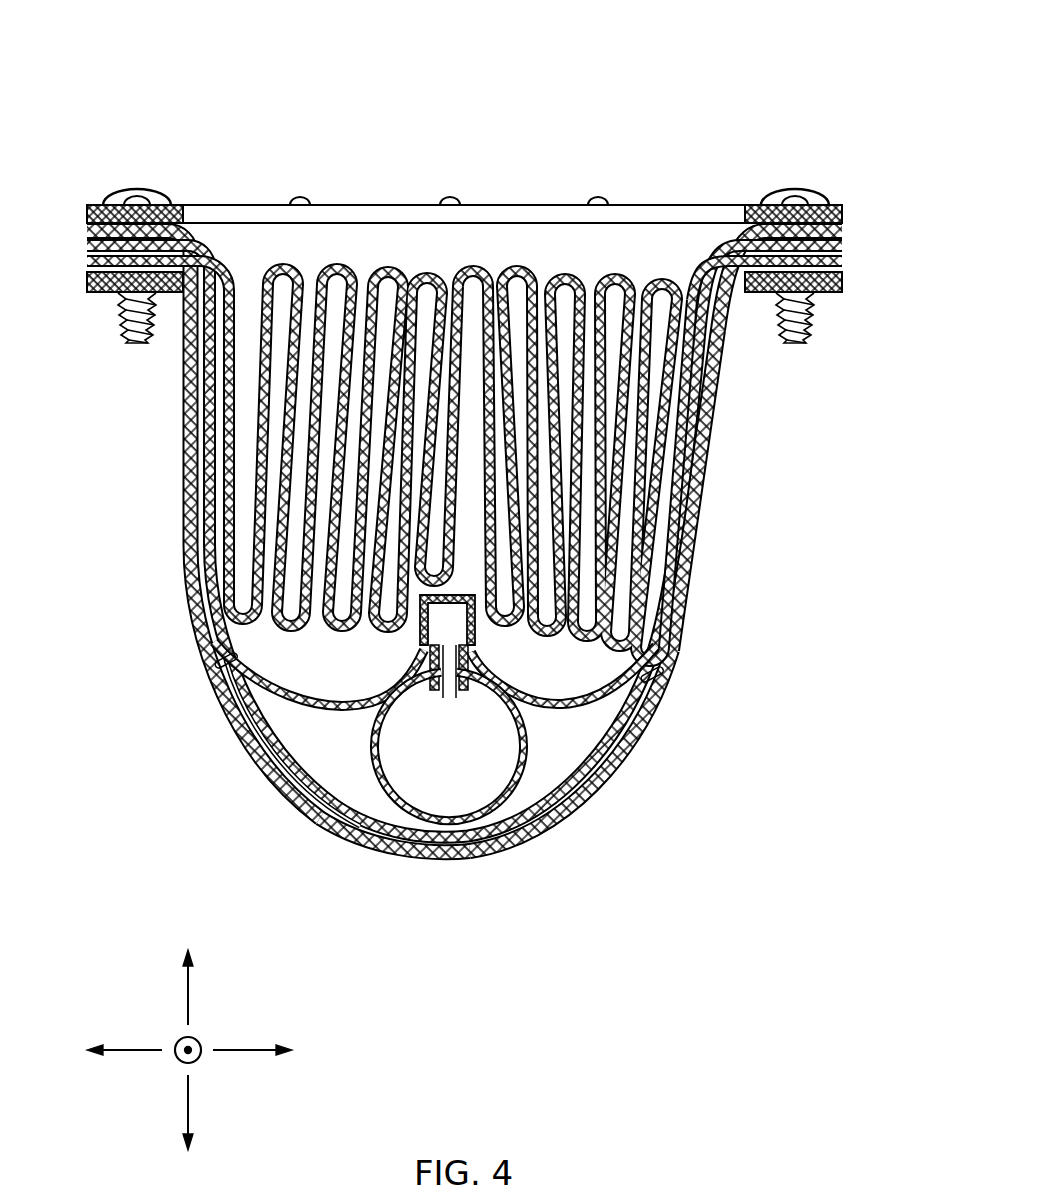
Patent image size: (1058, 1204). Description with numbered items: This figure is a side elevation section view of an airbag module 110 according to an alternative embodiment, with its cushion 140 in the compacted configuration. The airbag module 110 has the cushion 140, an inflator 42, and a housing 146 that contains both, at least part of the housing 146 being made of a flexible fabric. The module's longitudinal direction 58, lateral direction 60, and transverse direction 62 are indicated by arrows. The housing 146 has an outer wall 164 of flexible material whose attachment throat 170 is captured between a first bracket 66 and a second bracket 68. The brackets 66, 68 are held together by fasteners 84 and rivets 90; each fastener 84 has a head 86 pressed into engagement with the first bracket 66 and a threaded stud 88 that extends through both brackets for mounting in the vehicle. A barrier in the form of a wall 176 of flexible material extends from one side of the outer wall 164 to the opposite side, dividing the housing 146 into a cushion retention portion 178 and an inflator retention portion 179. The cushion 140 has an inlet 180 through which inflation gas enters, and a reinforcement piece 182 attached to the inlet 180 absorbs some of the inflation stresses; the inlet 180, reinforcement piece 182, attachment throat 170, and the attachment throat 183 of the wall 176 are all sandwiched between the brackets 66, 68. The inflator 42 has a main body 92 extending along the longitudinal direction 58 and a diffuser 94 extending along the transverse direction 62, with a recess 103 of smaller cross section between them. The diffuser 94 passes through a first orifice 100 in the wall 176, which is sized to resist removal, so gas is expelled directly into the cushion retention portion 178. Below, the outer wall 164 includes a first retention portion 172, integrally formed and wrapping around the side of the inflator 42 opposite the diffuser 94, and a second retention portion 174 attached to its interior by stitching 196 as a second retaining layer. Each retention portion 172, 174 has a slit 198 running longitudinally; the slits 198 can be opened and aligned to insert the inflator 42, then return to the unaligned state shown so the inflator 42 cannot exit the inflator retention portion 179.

The inflator 42 is at (560, 812).
The longitudinal direction 58 is at (194, 1058).
The lateral direction 60 is at (237, 1050).
The transverse direction 62 is at (190, 996).
The first bracket 66 is at (845, 215).
The second bracket 68 is at (845, 290).
The fastener 84 is at (492, 153).
The head 86 is at (137, 190).
The threaded stud 88 is at (125, 338).
The rivet 90 is at (120, 196).
The main body 92 is at (515, 780).
The diffuser 94 is at (421, 636).
The first orifice 100 is at (446, 690).
The recess 103 is at (476, 658).
The airbag module 110 is at (485, 470).
The cushion 140 is at (362, 255).
The housing 146 is at (761, 490).
The outer wall 164 is at (706, 472).
The attachment throat 170 is at (845, 268).
The first retention portion 172 is at (512, 865).
The second retention portion 174 is at (347, 772).
The wall 176 is at (566, 698).
The cushion retention portion 178 is at (625, 262).
The inflator retention portion 179 is at (380, 825).
The inlet 180 is at (701, 238).
The reinforcement piece 182 is at (845, 245).
The attachment throat 183 is at (845, 261).
The stitching 196 is at (218, 662).
The slit 198 is at (580, 772).